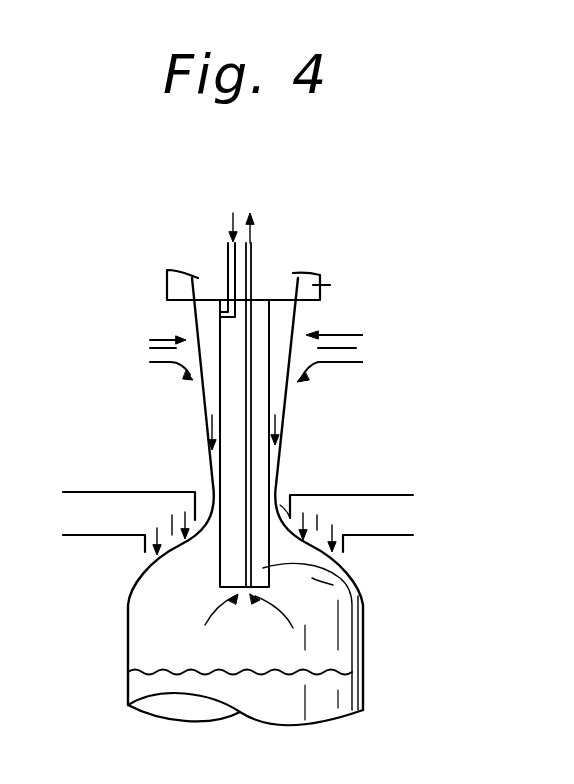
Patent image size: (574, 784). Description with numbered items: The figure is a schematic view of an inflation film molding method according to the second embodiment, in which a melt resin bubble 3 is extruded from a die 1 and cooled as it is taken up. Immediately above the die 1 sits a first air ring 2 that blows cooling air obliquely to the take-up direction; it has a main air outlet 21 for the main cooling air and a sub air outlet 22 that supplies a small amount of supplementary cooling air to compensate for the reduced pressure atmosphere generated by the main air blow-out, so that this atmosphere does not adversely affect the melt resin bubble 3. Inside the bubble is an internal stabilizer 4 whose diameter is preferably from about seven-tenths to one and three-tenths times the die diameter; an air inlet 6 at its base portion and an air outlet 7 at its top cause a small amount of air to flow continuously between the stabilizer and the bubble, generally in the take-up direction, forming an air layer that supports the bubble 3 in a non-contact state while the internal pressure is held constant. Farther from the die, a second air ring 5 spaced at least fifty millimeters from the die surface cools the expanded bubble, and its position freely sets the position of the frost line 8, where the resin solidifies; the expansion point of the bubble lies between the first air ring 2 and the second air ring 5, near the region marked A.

The die 1 is at (318, 288).
The first air ring 2 is at (355, 366).
The main air outlet 21 is at (312, 371).
The sub air outlet 22 is at (325, 335).
The melt resin bubble 3 is at (327, 640).
The internal stabilizer 4 is at (328, 577).
The second air ring 5 is at (385, 495).
The air inlet 6 is at (228, 266).
The air outlet 7 is at (252, 270).
The frost line 8 is at (330, 668).
The region A is at (280, 512).